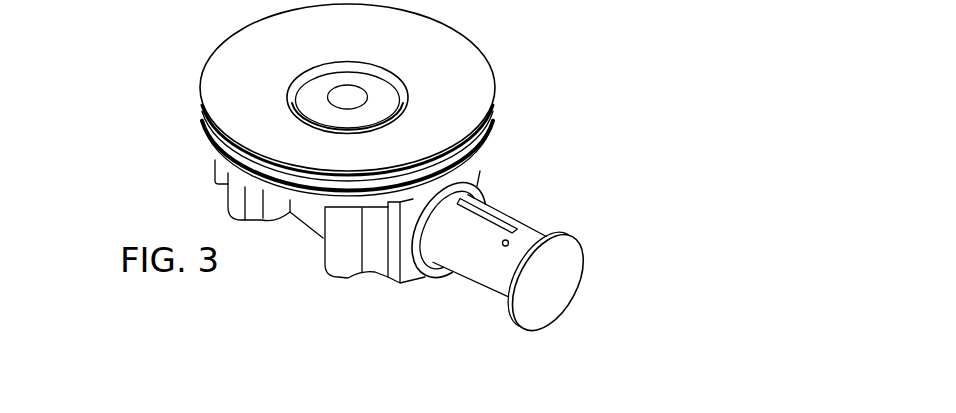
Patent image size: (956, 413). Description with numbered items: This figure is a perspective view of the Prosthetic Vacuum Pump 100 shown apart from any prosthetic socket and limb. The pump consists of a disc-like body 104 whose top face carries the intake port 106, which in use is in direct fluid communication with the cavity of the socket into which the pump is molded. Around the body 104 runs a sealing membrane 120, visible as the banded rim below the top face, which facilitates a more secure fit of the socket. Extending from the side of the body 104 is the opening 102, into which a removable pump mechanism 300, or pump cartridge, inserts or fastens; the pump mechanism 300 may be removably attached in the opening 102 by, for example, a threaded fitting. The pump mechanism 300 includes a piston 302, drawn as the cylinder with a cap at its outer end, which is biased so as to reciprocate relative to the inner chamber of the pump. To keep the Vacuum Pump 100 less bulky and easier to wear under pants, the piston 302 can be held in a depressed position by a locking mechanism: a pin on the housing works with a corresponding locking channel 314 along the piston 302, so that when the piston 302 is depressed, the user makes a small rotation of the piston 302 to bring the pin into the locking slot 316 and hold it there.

The Prosthetic Vacuum Pump 100 is at (523, 40).
The opening 102 is at (482, 188).
The body 104 is at (208, 148).
The intake port 106 is at (328, 97).
The sealing membrane 120 is at (495, 115).
The pump mechanism 300 is at (650, 223).
The piston 302 is at (568, 277).
The locking channel 314 is at (512, 228).
The locking slot 316 is at (505, 246).